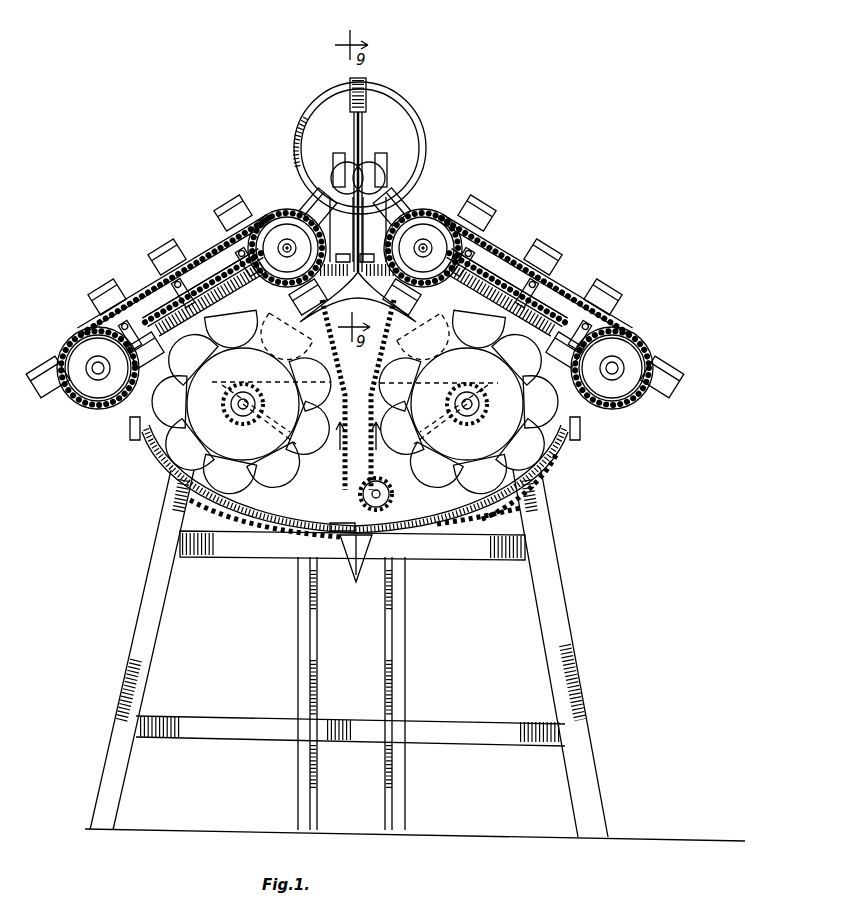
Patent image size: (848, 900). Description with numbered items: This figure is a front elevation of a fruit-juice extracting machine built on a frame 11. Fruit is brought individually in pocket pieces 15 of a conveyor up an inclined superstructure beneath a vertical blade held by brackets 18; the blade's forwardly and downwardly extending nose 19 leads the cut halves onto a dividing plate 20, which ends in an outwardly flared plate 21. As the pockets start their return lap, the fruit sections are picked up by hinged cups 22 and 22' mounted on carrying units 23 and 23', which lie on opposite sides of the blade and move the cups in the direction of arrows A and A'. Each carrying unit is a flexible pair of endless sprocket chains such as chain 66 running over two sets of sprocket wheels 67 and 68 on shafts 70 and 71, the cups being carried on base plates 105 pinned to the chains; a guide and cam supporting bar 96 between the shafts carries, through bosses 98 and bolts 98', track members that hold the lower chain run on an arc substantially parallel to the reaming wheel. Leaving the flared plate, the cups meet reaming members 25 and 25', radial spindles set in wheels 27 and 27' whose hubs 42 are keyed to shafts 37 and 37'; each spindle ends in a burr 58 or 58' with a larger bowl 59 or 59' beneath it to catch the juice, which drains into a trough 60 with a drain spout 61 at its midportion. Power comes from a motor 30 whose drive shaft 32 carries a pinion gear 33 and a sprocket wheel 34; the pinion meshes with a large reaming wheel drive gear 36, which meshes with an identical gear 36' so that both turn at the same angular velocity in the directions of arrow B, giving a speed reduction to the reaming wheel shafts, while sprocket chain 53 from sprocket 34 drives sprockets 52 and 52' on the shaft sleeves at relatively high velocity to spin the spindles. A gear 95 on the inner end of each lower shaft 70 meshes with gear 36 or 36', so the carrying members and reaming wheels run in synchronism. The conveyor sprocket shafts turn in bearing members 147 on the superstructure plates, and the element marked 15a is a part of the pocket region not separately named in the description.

The frame 11 is at (569, 542).
The pocket pieces 15 is at (380, 170).
The divider arms 15a is at (347, 163).
The brackets or braces 18 is at (303, 114).
The nose 19 is at (365, 135).
The dividing plate 20 is at (306, 204).
The outwardly flared plate 21 is at (378, 356).
The cup 22 is at (489, 204).
The cup 22' is at (233, 201).
The carrying unit 23 is at (531, 279).
The carrying unit 23' is at (201, 247).
The reaming member 25 is at (439, 377).
The reaming member 25' is at (271, 368).
The wheel 27 is at (453, 429).
The wheel 27' is at (244, 420).
The motor 30 is at (333, 531).
The drive shaft 32 is at (420, 552).
The pinion gear 33 is at (305, 580).
The sprocket wheel 34 is at (403, 600).
The reaming wheel drive gear 36 is at (478, 548).
The reaming wheel drive gear 36' is at (221, 509).
The shaft 37 is at (454, 414).
The shaft 37' is at (255, 419).
The hub 42 is at (232, 408).
The sprocket wheel 52 is at (467, 404).
The sprocket wheel 52' is at (243, 404).
The sprocket chain 53 is at (362, 505).
The burr 58 is at (465, 404).
The pocket 58' is at (244, 404).
The bowl member 59 is at (521, 357).
The pocket 59' is at (193, 358).
The trough member 60 is at (575, 460).
The drain spout 61 is at (360, 585).
The endless sprocket chain 66 is at (165, 290).
The sprocket wheels 67 is at (95, 342).
The sprocket wheels 68 is at (262, 232).
The lower shaft 70 is at (96, 380).
The shaft 71 is at (216, 241).
The gear 95 is at (62, 358).
The guide and cam supporting bar 96 is at (100, 296).
The bosses 98 is at (374, 269).
The bolts 98' is at (354, 262).
The base plate 105 is at (155, 262).
The bearing member 147 is at (322, 196).
The arrow A is at (437, 211).
The arrow A' is at (271, 199).
The arrow B is at (355, 436).